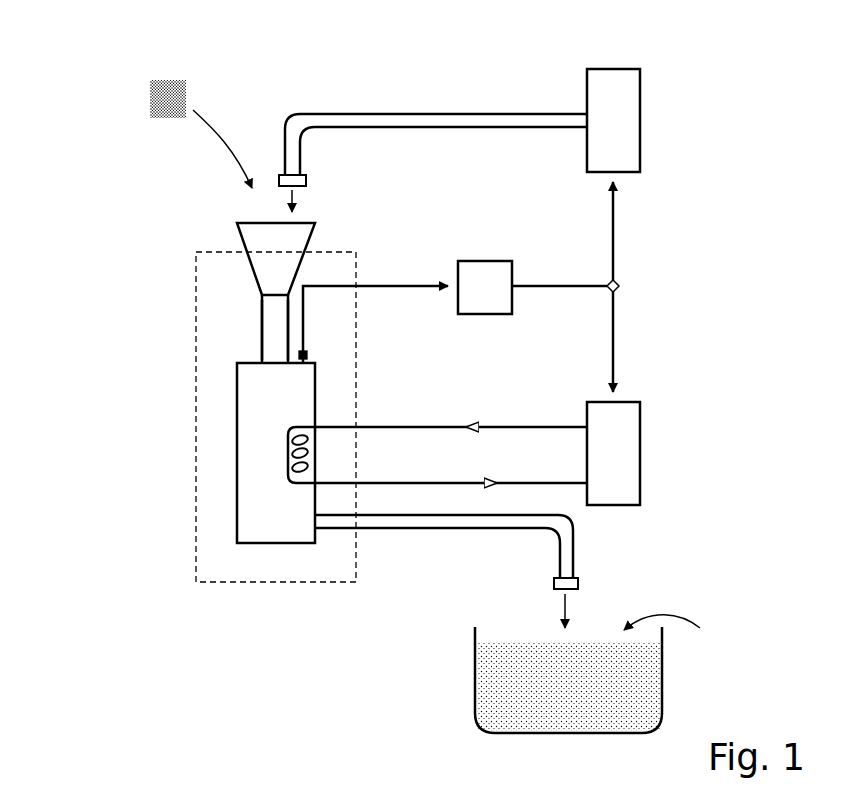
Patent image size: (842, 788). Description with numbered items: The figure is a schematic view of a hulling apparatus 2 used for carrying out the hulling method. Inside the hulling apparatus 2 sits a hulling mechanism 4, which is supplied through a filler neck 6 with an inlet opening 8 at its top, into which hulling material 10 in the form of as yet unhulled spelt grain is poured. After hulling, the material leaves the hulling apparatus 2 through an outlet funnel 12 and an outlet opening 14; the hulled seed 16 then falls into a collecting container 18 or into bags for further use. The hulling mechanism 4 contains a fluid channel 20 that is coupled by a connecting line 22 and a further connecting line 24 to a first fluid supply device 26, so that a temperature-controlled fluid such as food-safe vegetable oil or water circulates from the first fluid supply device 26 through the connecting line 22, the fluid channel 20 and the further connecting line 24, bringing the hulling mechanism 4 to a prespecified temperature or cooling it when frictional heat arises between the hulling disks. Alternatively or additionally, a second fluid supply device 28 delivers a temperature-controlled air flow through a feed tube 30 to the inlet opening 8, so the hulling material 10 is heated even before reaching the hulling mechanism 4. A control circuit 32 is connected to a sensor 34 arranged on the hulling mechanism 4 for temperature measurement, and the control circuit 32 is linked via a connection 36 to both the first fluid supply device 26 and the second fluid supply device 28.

The hulling apparatus 2 is at (295, 582).
The hulling mechanism 4 is at (237, 505).
The filler neck 6 is at (275, 340).
The inlet opening 8 is at (270, 220).
The hulling material 10 is at (145, 98).
The outlet funnel 12 is at (565, 525).
The outlet opening 14 is at (580, 588).
The hulled seed 16 is at (640, 610).
The collecting container 18 is at (662, 663).
The fluid channel 20 is at (288, 466).
The connecting line 22 is at (400, 432).
The further connecting line 24 is at (455, 487).
The first fluid supply device 26 is at (625, 443).
The second fluid supply device 28 is at (625, 130).
The feed tube 30 is at (537, 120).
The control circuit 32 is at (488, 280).
The sensor 34 is at (307, 355).
The connection 36 is at (620, 302).